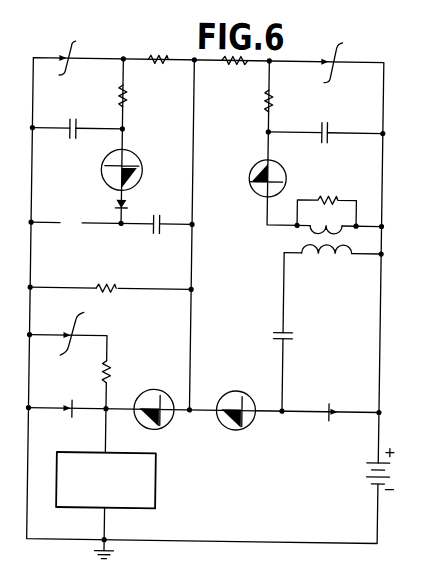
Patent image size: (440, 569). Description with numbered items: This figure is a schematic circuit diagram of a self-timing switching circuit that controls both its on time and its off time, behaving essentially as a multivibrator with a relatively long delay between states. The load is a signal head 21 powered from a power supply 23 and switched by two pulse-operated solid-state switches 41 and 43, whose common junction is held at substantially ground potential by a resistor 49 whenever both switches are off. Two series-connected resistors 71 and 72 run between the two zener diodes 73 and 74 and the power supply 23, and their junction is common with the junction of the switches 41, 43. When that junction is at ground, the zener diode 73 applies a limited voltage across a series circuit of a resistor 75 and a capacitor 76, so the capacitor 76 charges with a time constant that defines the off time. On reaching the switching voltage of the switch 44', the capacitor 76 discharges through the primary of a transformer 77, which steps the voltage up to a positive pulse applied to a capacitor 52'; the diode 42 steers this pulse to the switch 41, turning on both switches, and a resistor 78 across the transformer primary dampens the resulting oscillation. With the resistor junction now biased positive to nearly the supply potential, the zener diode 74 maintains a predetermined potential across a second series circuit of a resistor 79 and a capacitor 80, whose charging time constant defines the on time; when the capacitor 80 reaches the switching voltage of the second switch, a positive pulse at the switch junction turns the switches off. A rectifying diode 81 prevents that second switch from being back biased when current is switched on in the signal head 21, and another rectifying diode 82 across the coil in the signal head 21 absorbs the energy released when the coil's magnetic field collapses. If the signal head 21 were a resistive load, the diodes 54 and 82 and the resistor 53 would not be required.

The signal head 21 is at (158, 475).
The power supply 23 is at (365, 460).
The switch 41 is at (243, 382).
The diode 42 is at (328, 403).
The switch 43 is at (158, 390).
The switch 44' is at (245, 178).
The resistor 49 is at (108, 271).
The capacitor 52' is at (296, 348).
The resistor 53 is at (111, 363).
The diode 54 is at (78, 326).
The resistor 71 is at (234, 74).
The resistor 72 is at (162, 57).
The zener diode 73 is at (343, 49).
The zener diode 74 is at (69, 46).
The resistor 75 is at (267, 100).
The capacitor 76 is at (328, 141).
The transformer 77 is at (298, 238).
The resistor 78 is at (324, 197).
The resistor 79 is at (124, 100).
The capacitor 80 is at (68, 133).
The rectifying diode 81 is at (128, 207).
The rectifying diode 82 is at (75, 402).